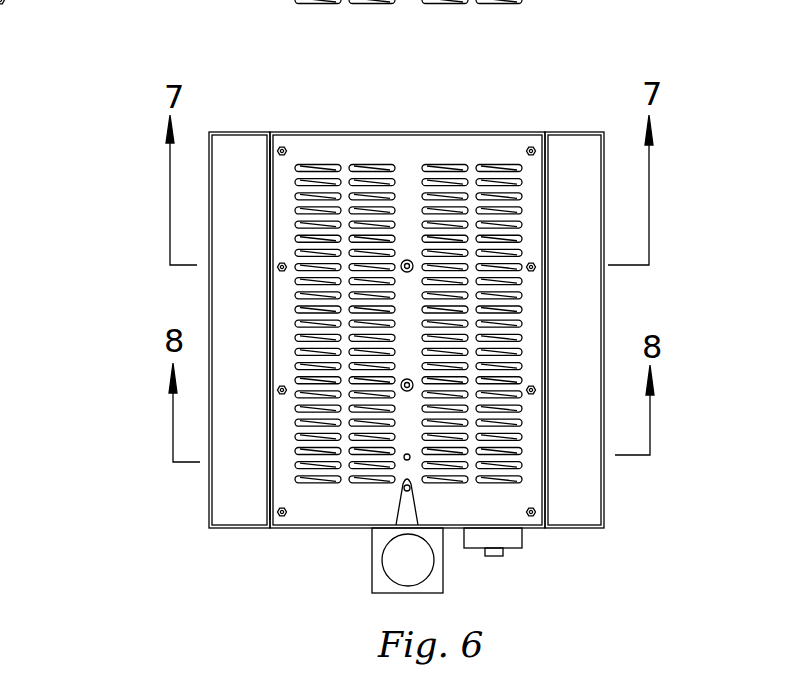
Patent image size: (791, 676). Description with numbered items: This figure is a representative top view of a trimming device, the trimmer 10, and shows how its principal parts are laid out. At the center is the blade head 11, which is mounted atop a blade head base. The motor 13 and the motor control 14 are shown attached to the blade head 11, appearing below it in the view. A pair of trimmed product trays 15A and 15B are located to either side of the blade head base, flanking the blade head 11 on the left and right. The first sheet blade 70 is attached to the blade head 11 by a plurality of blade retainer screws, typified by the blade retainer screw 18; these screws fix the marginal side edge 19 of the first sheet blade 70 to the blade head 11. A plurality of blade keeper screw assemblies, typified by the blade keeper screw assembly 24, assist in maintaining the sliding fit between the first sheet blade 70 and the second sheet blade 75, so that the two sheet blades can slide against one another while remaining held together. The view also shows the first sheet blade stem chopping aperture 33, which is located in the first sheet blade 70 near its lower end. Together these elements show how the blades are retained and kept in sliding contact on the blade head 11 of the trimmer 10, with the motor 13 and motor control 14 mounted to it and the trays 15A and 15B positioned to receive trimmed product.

The trimmer 10 is at (131, 61).
The blade head 11 is at (478, 133).
The motor 13 is at (382, 572).
The motor control 14 is at (510, 542).
The trimmed product tray 15A is at (243, 148).
The trimmed product tray 15B is at (571, 148).
The blade retainer screw 18 is at (280, 390).
The marginal side edge 19 is at (272, 213).
The blade keeper screw assembly 24 is at (406, 260).
The first sheet blade stem chopping aperture 33 is at (407, 454).
The first sheet blade 70 is at (408, 241).
The second sheet blade 75 is at (335, 180).